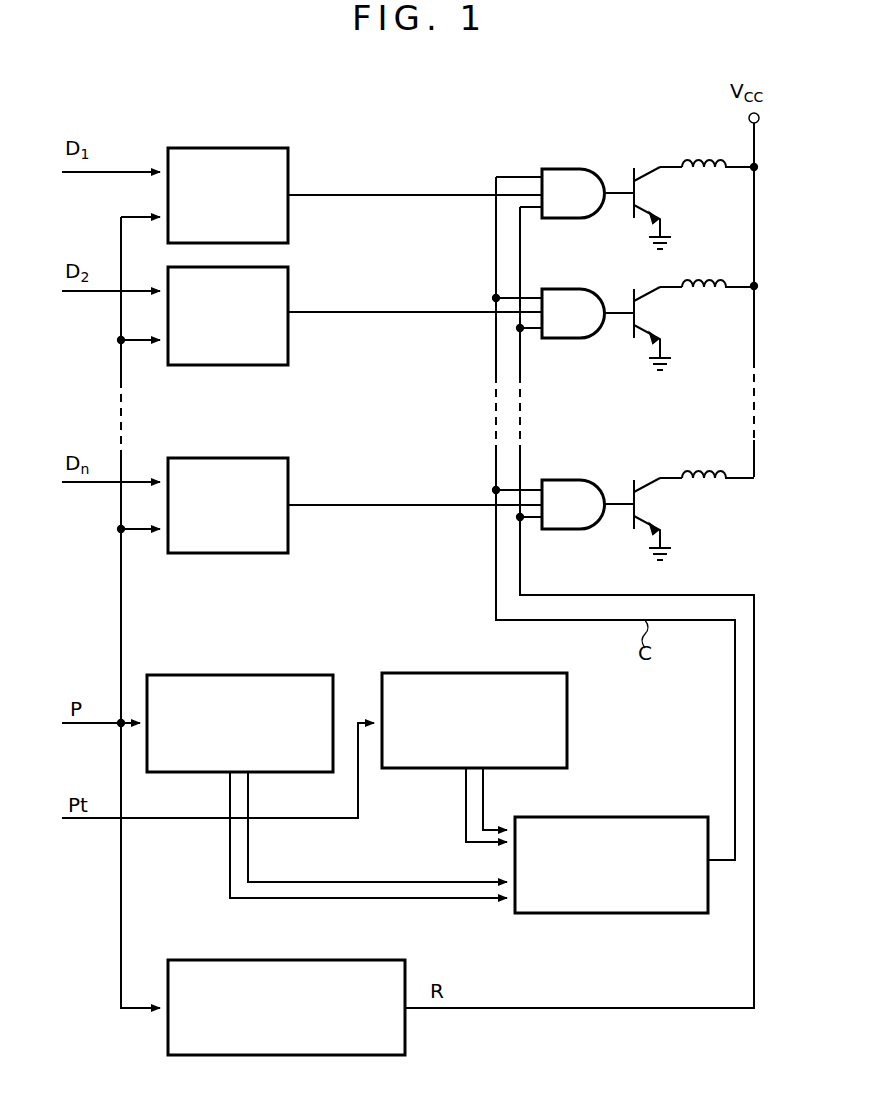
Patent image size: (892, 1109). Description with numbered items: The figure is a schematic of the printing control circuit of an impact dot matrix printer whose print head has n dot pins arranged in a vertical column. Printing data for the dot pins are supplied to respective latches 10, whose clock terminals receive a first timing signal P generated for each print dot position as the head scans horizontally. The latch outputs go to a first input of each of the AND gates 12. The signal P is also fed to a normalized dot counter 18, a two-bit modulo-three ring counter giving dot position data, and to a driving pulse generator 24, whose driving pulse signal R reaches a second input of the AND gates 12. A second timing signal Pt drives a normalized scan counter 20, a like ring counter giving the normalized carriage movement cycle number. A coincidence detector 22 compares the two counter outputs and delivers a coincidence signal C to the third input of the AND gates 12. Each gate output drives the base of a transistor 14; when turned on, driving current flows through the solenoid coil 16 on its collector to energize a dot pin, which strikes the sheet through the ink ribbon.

The latch 10 is at (290, 158).
The AND gate 12 is at (572, 169).
The transistor 14 is at (652, 197).
The solenoid coil 16 is at (700, 164).
The normalized dot counter 18 is at (236, 675).
The normalized scan counter 20 is at (438, 673).
The coincidence detector 22 is at (655, 817).
The driving pulse generator 24 is at (340, 961).